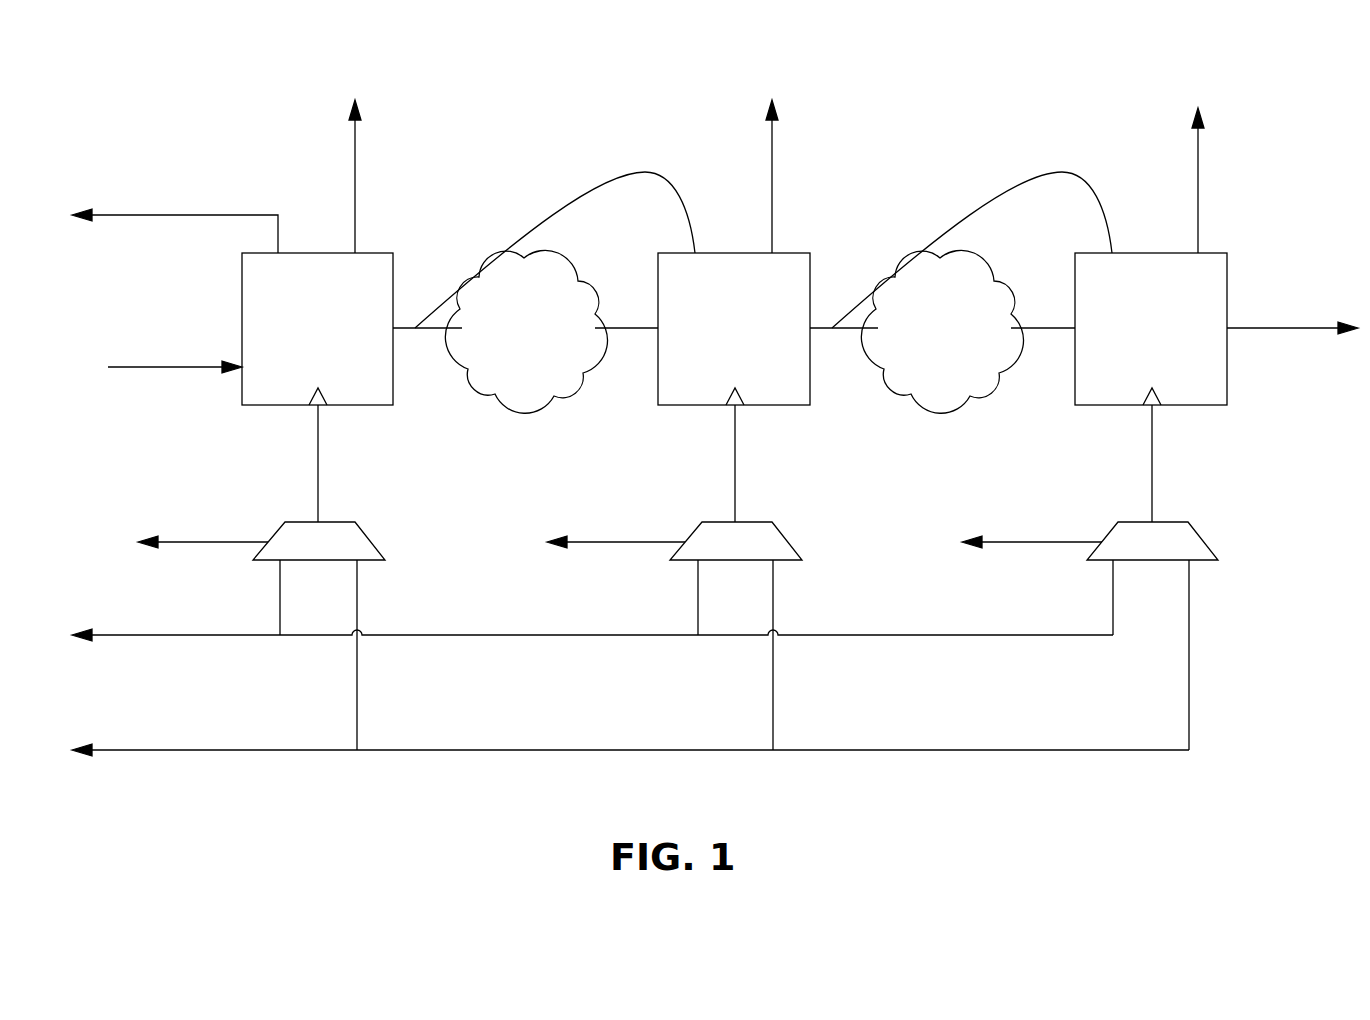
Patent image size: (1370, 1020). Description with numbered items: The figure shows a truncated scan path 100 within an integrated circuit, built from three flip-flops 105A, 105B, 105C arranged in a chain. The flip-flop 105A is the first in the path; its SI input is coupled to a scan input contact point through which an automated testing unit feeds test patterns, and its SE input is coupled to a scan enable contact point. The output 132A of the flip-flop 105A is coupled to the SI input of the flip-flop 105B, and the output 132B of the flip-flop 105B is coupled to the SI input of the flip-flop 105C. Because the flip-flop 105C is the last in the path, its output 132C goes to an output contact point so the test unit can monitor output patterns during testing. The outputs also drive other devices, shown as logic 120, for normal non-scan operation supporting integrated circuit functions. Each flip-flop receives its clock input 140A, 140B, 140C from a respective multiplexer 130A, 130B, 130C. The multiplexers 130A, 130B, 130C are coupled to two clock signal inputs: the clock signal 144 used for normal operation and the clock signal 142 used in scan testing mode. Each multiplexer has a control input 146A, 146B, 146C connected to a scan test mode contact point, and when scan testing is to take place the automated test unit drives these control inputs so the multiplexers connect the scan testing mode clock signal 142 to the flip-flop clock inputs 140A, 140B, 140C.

The scan chain test circuit 100 is at (1317, 31).
The flip-flop 105A is at (393, 253).
The flip-flop 105B is at (810, 253).
The flip-flop 105C is at (1227, 253).
The logic 120 is at (583, 272).
The multiplexer 130A is at (345, 521).
The multiplexer 130B is at (762, 521).
The multiplexer 130C is at (1178, 521).
The output 132A is at (432, 329).
The output 132B is at (848, 329).
The output 132C is at (1285, 328).
The clock input 140A is at (319, 463).
The clock input 140B is at (736, 463).
The clock input 140C is at (1153, 458).
The clock signal input 142 is at (222, 637).
The clock signal input 144 is at (145, 750).
The control input 146A is at (132, 543).
The control input 146B is at (605, 543).
The control input 146C is at (1033, 543).